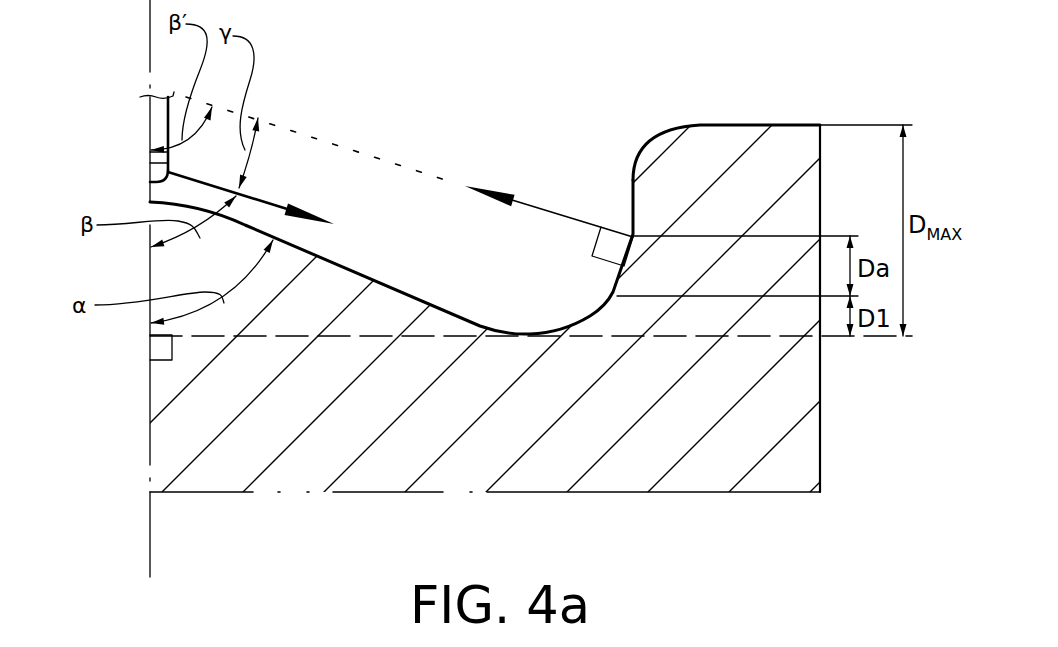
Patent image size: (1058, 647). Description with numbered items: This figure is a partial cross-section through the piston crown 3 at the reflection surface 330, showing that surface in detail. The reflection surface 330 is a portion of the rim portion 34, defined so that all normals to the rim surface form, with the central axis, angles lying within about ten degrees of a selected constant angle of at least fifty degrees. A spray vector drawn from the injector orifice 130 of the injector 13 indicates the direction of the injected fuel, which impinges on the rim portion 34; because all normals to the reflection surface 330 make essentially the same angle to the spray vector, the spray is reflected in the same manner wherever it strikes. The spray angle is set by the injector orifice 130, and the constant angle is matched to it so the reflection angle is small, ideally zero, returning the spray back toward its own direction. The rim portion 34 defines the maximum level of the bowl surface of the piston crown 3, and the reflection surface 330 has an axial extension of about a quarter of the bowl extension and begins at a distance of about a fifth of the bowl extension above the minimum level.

The piston crown 3 is at (748, 435).
The injector 13 is at (160, 133).
The injector orifice 130 is at (167, 172).
The reflection surface 330 is at (617, 282).
The rim portion 34 is at (745, 125).